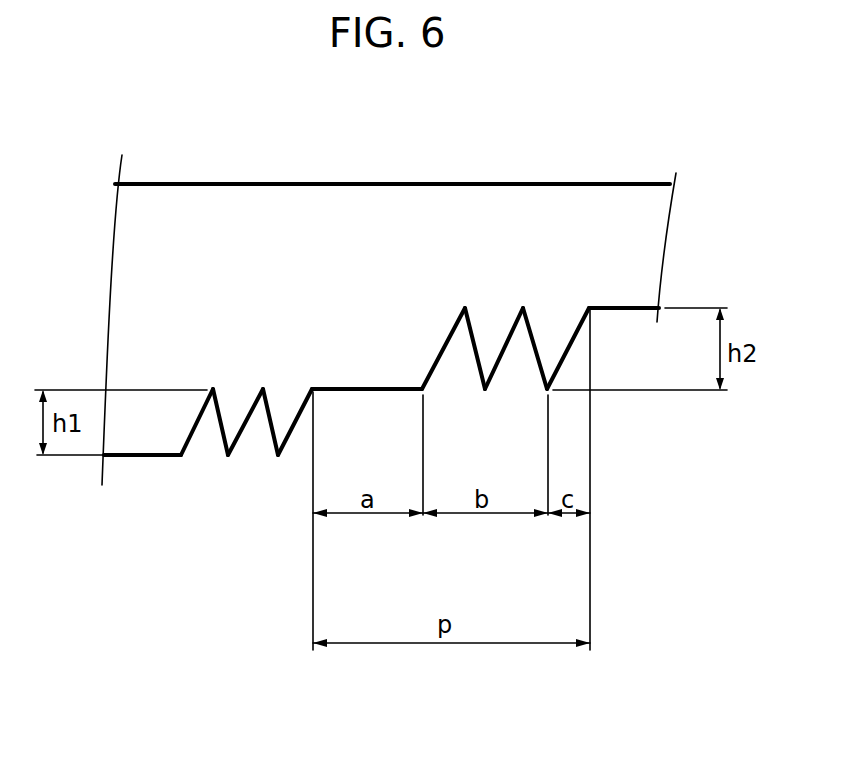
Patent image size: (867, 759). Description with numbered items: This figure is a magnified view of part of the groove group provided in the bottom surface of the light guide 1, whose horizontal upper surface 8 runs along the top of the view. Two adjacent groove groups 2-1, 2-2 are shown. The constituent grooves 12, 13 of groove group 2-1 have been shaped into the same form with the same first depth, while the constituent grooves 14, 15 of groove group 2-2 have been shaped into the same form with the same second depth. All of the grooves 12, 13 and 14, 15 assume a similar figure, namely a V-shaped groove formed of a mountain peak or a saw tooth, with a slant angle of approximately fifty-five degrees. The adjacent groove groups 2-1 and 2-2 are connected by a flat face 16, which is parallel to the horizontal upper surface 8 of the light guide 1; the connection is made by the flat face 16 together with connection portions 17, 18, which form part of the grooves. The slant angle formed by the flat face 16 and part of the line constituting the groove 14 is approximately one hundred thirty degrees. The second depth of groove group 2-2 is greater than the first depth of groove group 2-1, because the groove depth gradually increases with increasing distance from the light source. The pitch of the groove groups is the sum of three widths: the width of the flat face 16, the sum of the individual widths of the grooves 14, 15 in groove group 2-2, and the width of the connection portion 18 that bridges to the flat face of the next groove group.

The light guide 1 is at (389, 295).
The horizontal upper surface 8 is at (212, 185).
The groove group 2-1 is at (234, 411).
The groove group 2-2 is at (547, 346).
The groove 12 is at (202, 442).
The groove 13 is at (260, 433).
The connection portion 17 is at (303, 430).
The flat face 16 is at (360, 388).
The groove 14 is at (462, 347).
The groove 15 is at (522, 347).
The connection portion 18 is at (572, 368).